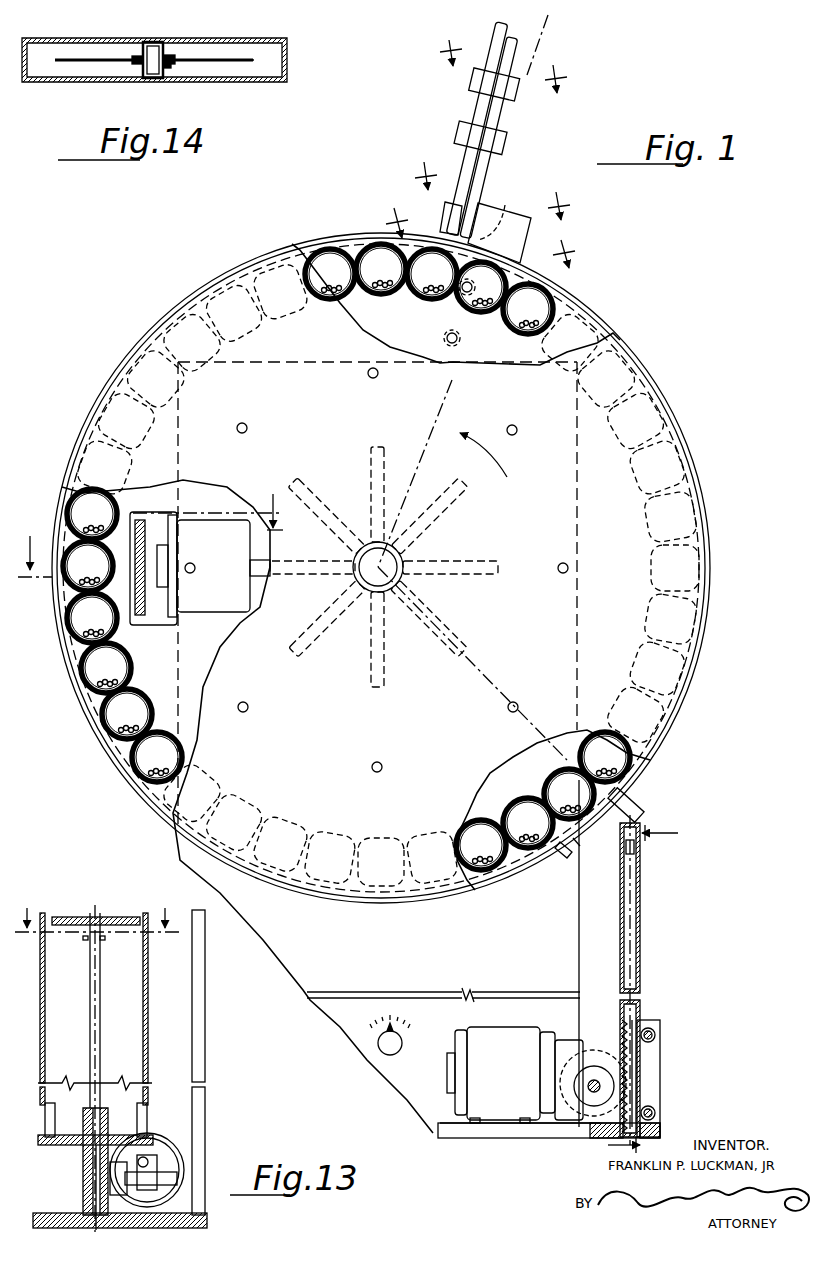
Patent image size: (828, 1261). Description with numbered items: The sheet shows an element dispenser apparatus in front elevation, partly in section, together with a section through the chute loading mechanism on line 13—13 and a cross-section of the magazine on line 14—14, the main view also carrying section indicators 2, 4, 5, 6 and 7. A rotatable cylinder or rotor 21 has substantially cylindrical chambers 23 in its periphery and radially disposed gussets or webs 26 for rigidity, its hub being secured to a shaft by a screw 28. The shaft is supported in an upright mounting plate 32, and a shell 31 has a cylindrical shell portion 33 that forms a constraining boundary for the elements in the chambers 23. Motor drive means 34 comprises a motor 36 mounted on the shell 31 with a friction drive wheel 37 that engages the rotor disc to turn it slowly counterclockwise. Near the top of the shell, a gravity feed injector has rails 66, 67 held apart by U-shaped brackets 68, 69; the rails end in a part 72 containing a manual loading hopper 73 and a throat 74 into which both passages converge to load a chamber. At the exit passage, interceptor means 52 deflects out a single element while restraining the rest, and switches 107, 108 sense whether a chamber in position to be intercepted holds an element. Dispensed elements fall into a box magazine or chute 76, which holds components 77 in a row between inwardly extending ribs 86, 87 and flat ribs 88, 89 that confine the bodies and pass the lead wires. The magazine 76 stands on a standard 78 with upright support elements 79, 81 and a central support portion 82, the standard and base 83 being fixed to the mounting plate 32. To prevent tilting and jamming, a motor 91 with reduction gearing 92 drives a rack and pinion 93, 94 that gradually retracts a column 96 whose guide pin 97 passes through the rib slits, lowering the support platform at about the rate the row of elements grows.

In FIG. 1, the section line 2- 2 is at (536, 17).
In FIG. 1, the section line 4- 4 is at (150, 524).
In FIG. 1, the section line 5- 5 is at (500, 81).
In FIG. 1, the section line 6- 6 is at (491, 184).
In FIG. 1, the section line 7- 7 is at (396, 206).
In FIG. 1, the section line 13- 13 is at (648, 992).
In FIG. 13, the section line 14- 14 is at (97, 908).
In FIG. 1, the rotatable cylinder or rotor 21 is at (332, 347).
In FIG. 1, the cylindrical chambers 23 is at (340, 247).
In FIG. 1, the gussets or webs 26 is at (338, 513).
In FIG. 1, the screw 28 is at (393, 563).
In FIG. 1, the shell 31 is at (215, 647).
In FIG. 1, the upright mounting plate 32 is at (580, 564).
In FIG. 13, the upright mounting plate 32 is at (205, 1068).
In FIG. 1, the cylindrical shell portion 33 is at (606, 328).
In FIG. 1, the motor drive means 34 is at (218, 550).
In FIG. 1, the motor 36 is at (234, 590).
In FIG. 1, the friction drive wheel 37 is at (148, 610).
In FIG. 1, the interceptor means 52 is at (608, 838).
In FIG. 1, the guide rail 66 is at (477, 129).
In FIG. 1, the guide rail 67 is at (489, 138).
In FIG. 1, the U-shaped bracket 68 is at (494, 84).
In FIG. 1, the U-shaped bracket 69 is at (480, 138).
In FIG. 1, the part 72 is at (521, 244).
In FIG. 1, the manual loading hopper 73 is at (506, 205).
In FIG. 1, the throat 74 is at (448, 230).
In FIG. 14, the box magazine or chute 76 is at (256, 82).
In FIG. 1, the box magazine or chute 76 is at (642, 933).
In FIG. 13, the box magazine or chute 76 is at (148, 985).
In FIG. 14, the electric circuit components 77 is at (236, 58).
In FIG. 13, the electric circuit components 77 is at (63, 915).
In FIG. 13, the standard 78 is at (85, 1162).
In FIG. 13, the upright support element 79 is at (47, 1130).
In FIG. 13, the upright support element 81 is at (148, 1120).
In FIG. 13, the central support portion 82 is at (86, 1124).
In FIG. 1, the base 83 is at (460, 1130).
In FIG. 13, the base 83 is at (55, 1217).
In FIG. 14, the rib or flange 86 is at (140, 70).
In FIG. 14, the rib or flange 87 is at (140, 46).
In FIG. 14, the flat rib 88 is at (168, 70).
In FIG. 14, the flat rib 89 is at (168, 50).
In FIG. 1, the motor 91 is at (517, 1043).
In FIG. 13, the motor 91 is at (172, 1142).
In FIG. 1, the reduction gearing 92 is at (570, 1048).
In FIG. 13, the reduction gearing 92 is at (157, 1170).
In FIG. 1, the rack 93 is at (622, 1060).
In FIG. 1, the pinion 94 is at (620, 1083).
In FIG. 13, the pinion 94 is at (88, 1172).
In FIG. 14, the column 96 is at (156, 48).
In FIG. 1, the column 96 is at (633, 893).
In FIG. 13, the column 96 is at (92, 975).
In FIG. 14, the guide pin 97 is at (138, 66).
In FIG. 1, the guide pin 97 is at (634, 852).
In FIG. 13, the guide pin 97 is at (103, 940).
In FIG. 1, the switch 107 is at (562, 850).
In FIG. 1, the switch 108 is at (576, 848).